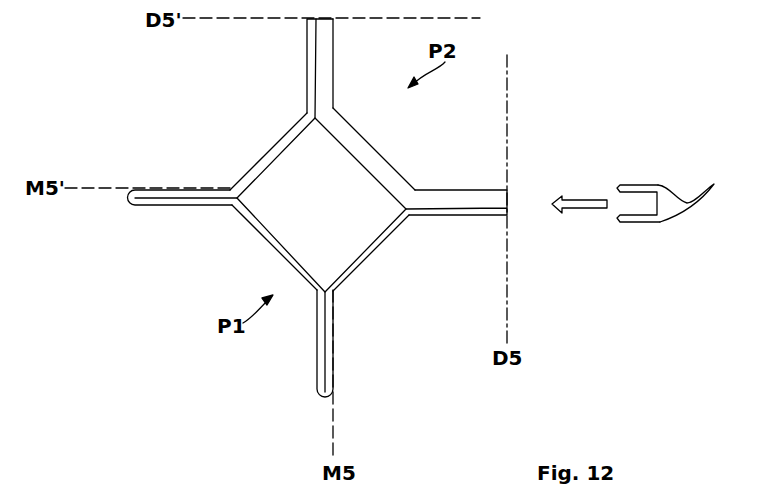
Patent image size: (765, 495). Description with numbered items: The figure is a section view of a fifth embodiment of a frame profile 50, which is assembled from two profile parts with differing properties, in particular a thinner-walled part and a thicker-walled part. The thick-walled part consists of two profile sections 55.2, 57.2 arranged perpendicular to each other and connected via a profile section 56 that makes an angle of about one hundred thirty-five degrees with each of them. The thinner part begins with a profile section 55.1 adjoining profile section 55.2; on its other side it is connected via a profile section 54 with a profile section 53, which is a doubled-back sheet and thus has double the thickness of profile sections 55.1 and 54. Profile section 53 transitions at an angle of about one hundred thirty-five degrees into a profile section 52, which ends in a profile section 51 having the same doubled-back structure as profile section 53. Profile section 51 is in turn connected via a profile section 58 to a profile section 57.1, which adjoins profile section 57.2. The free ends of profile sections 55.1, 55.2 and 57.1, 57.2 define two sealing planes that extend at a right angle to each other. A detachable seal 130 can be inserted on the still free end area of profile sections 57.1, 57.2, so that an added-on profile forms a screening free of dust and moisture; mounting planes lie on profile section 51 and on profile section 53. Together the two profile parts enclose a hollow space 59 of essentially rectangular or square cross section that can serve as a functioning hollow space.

The frame profile 50 is at (112, 340).
The profile section 51 is at (328, 352).
The profile section 52 is at (268, 247).
The profile section 53 is at (185, 200).
The profile section 54 is at (252, 168).
The profile section 55.1 is at (307, 47).
The profile section 55.2 is at (324, 47).
The profile section 56 is at (370, 155).
The profile section 57.1 is at (478, 218).
The profile section 57.2 is at (475, 203).
The profile section 58 is at (388, 243).
The hollow space 59 is at (330, 237).
The detachable seal 130 is at (668, 212).